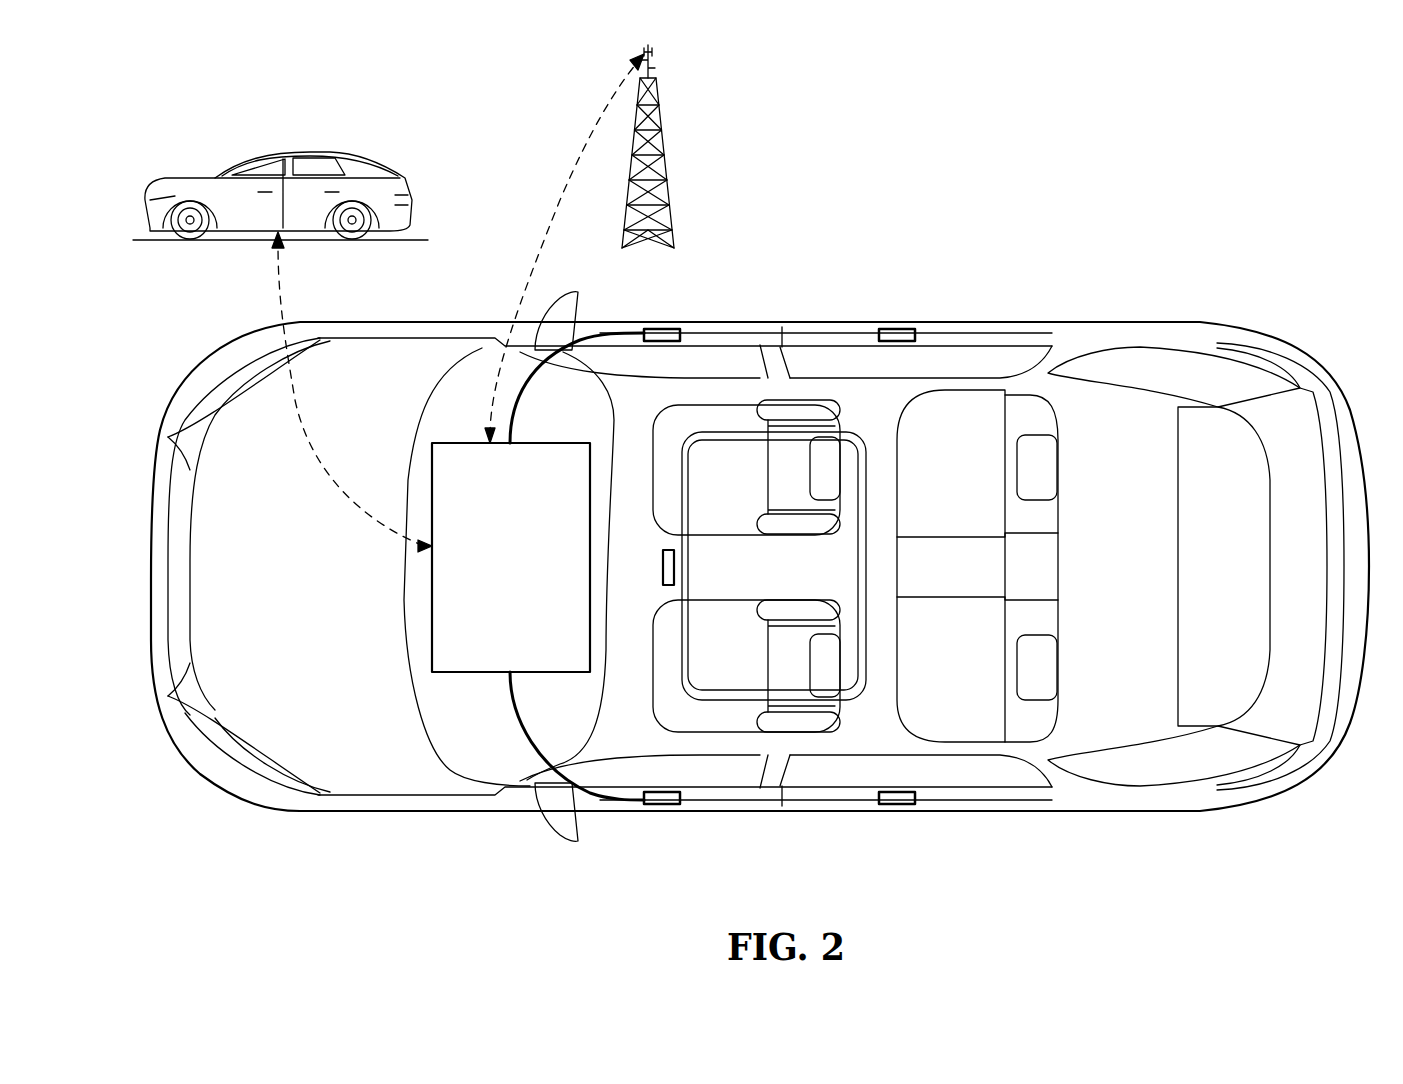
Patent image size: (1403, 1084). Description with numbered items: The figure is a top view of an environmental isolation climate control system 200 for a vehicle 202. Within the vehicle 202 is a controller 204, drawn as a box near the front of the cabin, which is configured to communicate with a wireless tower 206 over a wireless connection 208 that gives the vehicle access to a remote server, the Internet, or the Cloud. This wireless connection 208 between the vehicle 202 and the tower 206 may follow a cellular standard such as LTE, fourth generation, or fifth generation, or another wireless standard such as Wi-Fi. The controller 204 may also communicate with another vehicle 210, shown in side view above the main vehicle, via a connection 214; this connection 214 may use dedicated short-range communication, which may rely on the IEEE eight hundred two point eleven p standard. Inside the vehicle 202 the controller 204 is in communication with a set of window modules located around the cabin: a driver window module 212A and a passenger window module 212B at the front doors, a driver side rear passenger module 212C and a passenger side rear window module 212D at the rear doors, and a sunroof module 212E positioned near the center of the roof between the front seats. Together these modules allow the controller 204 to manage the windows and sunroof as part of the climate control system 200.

The environmental isolation climate control system 200 is at (1097, 268).
The vehicle 202 is at (758, 327).
The controller 204 is at (432, 612).
The wireless tower 206 is at (662, 156).
The wireless connection 208 is at (505, 254).
The other vehicle 210 is at (290, 152).
The driver window module 212A is at (663, 806).
The passenger window module 212B is at (668, 328).
The driver side rear passenger module 212C is at (898, 806).
The passenger side rear window module 212D is at (898, 328).
The sunroof module 212E is at (674, 566).
The connection 214 is at (300, 428).